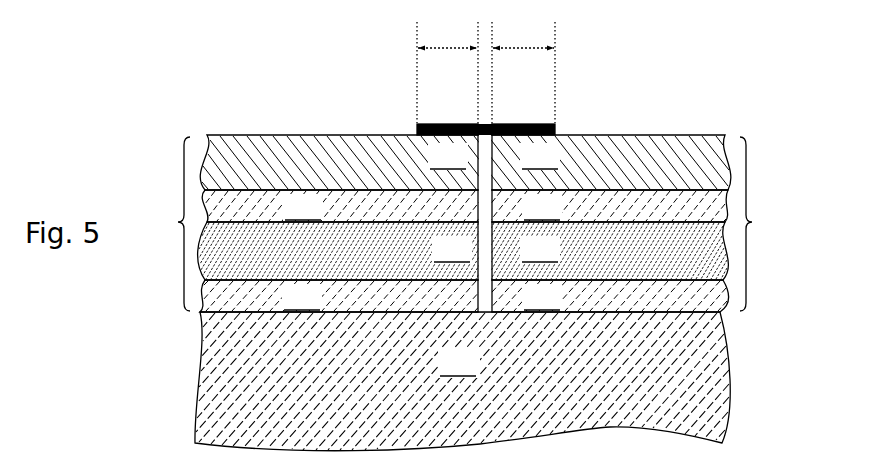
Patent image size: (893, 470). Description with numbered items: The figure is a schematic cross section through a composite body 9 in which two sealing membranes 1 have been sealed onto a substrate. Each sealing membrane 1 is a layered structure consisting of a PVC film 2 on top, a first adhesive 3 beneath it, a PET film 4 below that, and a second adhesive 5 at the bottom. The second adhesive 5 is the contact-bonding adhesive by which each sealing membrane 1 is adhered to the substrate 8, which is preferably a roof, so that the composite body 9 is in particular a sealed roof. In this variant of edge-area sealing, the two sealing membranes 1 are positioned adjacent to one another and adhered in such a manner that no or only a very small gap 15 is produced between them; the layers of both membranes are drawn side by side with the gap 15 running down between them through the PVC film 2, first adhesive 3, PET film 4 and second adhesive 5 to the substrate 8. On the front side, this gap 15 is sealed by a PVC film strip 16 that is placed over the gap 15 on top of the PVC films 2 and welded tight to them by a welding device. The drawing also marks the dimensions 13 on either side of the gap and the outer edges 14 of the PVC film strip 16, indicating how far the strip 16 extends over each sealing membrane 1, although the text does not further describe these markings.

The sealing membrane 1 is at (467, 224).
The PVC film (F1) 2 is at (228, 150).
The first adhesive (K1) 3 is at (213, 203).
The PET film (F2) 4 is at (207, 270).
The second adhesive (K2) 5 is at (210, 300).
The substrate (S1) 8 is at (700, 373).
The composite body 9 is at (216, 114).
The electrode width 13 is at (486, 71).
The electrode outer edge 14 is at (409, 134).
The gap 15 is at (496, 133).
The PVC film strip 16 is at (452, 123).